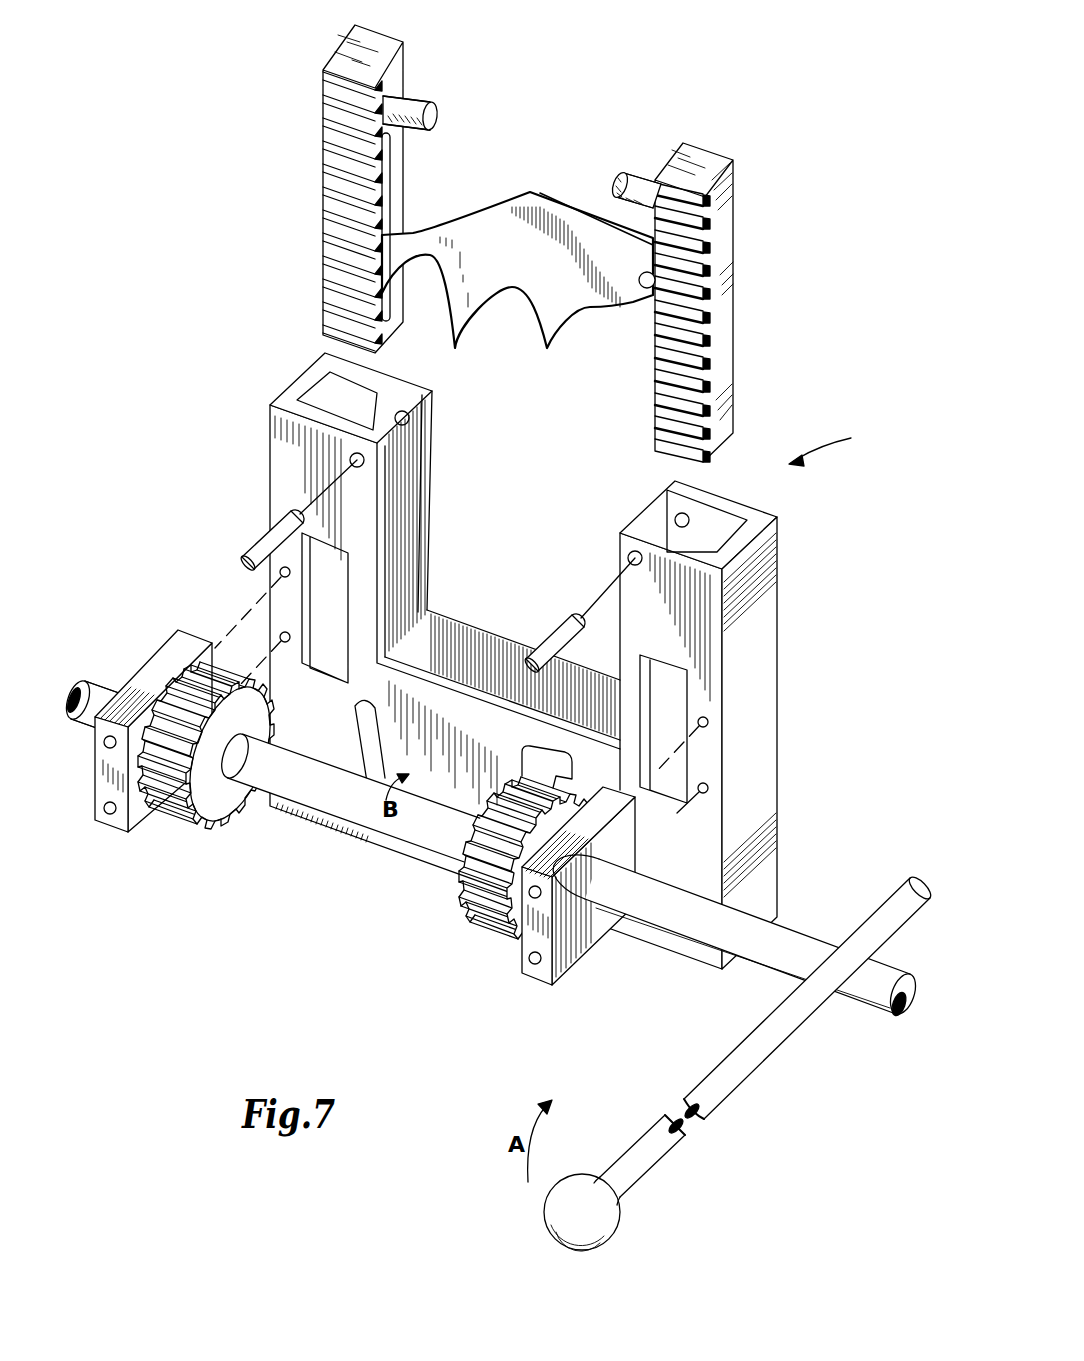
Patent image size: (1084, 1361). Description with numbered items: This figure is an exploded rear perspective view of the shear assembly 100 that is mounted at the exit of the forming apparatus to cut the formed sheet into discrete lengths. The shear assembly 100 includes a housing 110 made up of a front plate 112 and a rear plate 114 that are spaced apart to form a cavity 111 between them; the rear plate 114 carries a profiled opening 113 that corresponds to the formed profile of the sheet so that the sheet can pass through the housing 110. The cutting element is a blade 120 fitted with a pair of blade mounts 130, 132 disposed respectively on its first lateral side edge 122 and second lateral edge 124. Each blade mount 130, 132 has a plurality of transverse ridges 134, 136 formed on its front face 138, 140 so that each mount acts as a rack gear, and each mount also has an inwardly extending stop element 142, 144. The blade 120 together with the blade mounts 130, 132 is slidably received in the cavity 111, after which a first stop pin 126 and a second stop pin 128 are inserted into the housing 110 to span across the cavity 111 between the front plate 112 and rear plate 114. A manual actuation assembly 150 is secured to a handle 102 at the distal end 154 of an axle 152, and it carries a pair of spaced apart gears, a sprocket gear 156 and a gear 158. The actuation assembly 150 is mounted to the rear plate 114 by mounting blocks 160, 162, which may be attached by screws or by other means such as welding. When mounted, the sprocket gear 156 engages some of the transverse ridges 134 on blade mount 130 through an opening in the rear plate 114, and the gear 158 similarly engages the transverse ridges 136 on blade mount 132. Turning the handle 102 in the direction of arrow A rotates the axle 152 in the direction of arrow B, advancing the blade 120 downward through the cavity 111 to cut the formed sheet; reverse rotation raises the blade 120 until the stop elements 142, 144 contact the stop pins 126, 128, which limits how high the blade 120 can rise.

The shear assembly 100 is at (838, 446).
The handle 102 is at (727, 1078).
The housing 110 is at (497, 661).
The cavity 111 is at (460, 647).
The front plate 112 is at (778, 722).
The profiled opening 113 is at (315, 690).
The rear plate 114 is at (710, 606).
The blade 120 is at (534, 268).
The first lateral side edge 122 is at (382, 258).
The second lateral edge 124 is at (656, 282).
The first stop pin 126 is at (268, 525).
The second stop pin 128 is at (563, 628).
The blade mount 130 is at (360, 186).
The blade mount 132 is at (719, 280).
The transverse ridges 134 is at (337, 240).
The transverse ridges 136 is at (700, 396).
The front face 138 is at (326, 126).
The front face 140 is at (700, 256).
The stop element 142 is at (414, 103).
The stop element 144 is at (630, 178).
The manual actuation assembly 150 is at (348, 810).
The axle 152 is at (99, 712).
The distal end 154 is at (856, 978).
The sprocket gear 156 is at (218, 804).
The gear 158 is at (478, 925).
The mounting block 160 is at (97, 806).
The mounting block 162 is at (540, 972).